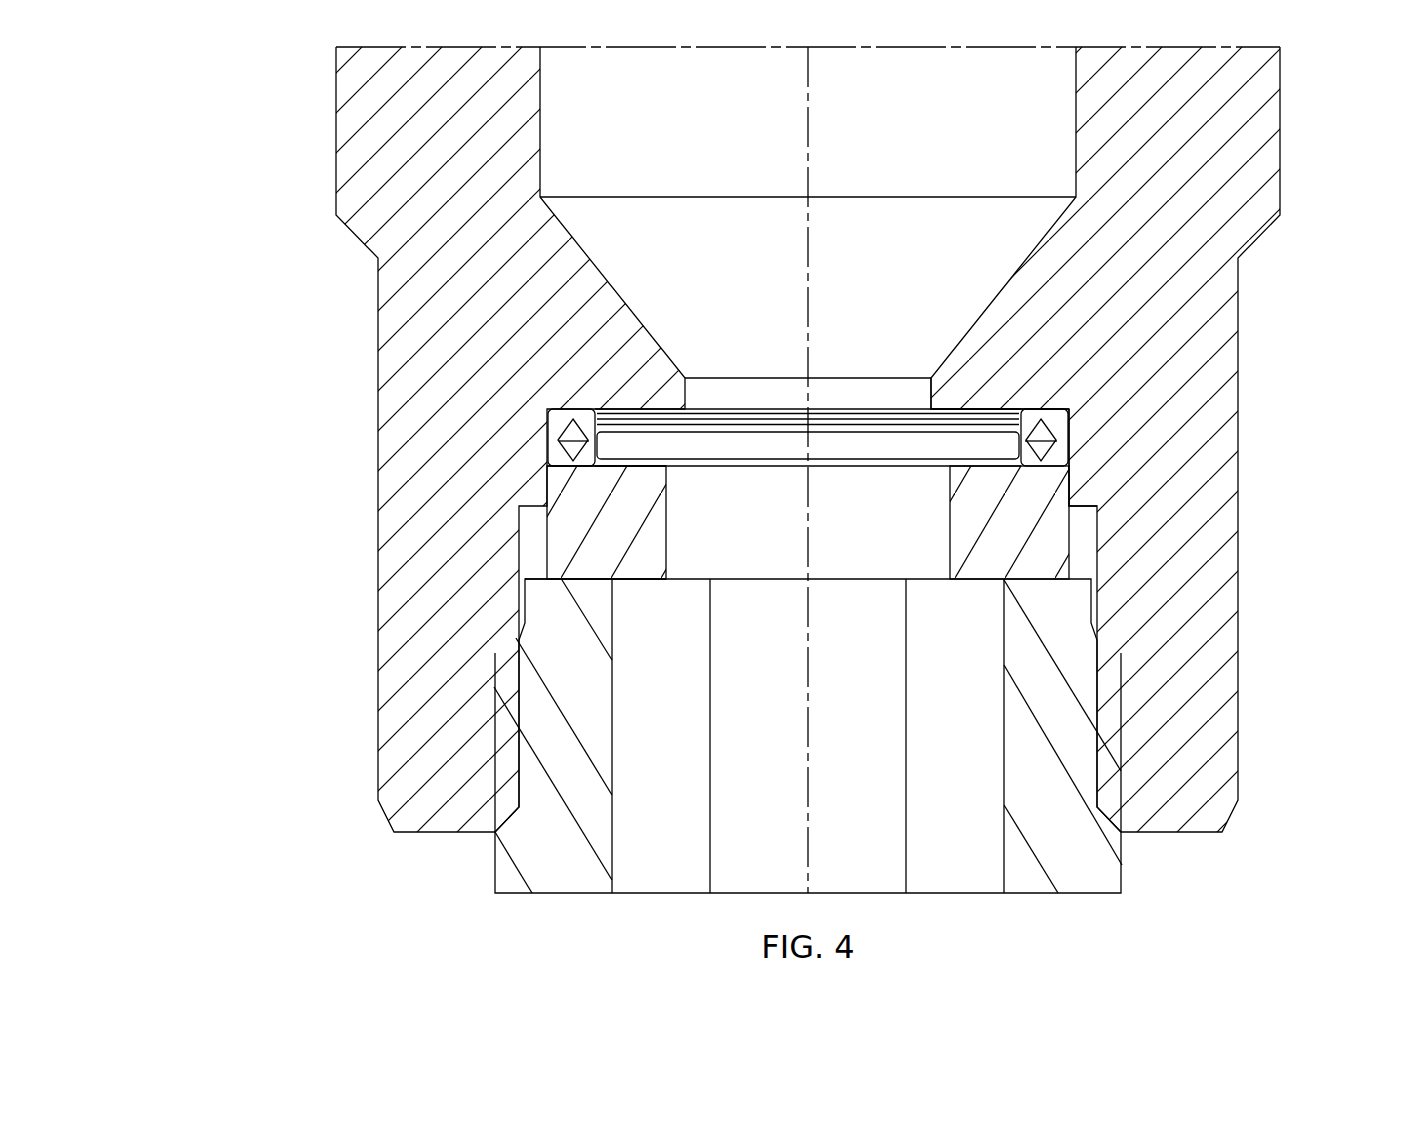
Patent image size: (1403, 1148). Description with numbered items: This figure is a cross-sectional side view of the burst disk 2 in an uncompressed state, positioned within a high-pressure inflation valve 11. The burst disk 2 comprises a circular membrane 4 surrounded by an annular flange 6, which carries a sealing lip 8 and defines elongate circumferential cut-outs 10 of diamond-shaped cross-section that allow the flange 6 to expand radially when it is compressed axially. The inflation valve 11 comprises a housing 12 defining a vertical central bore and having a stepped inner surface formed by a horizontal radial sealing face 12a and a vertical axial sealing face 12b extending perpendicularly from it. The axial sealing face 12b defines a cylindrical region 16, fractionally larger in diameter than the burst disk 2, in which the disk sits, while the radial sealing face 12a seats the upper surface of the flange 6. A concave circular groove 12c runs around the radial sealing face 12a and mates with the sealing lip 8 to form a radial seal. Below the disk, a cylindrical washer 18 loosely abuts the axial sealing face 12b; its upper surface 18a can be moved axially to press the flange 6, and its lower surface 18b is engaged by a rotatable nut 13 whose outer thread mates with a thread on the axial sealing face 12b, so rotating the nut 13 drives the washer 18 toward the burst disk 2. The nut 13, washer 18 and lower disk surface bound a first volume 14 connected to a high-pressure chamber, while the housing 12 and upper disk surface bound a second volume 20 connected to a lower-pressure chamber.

The high-pressure inflation valve 11 is at (280, 144).
The housing 12 is at (1165, 256).
The radial sealing face 12a is at (1040, 407).
The axial sealing face 12b is at (1058, 483).
The concave circular groove 12c is at (1040, 407).
The second volume 20 is at (887, 243).
The burst disk 2 is at (1053, 423).
The circular membrane 4 is at (645, 423).
The annular flange 6 is at (547, 467).
The sealing lip 8 is at (575, 406).
The elongate cut-outs 10 is at (575, 447).
The cylindrical region 16 is at (1065, 443).
The washer 18 is at (1000, 533).
The upper surface of the washer 18a is at (581, 470).
The lower surface of the washer 18b is at (635, 580).
The rotatable nut 13 is at (1067, 860).
The first volume 14 is at (887, 838).